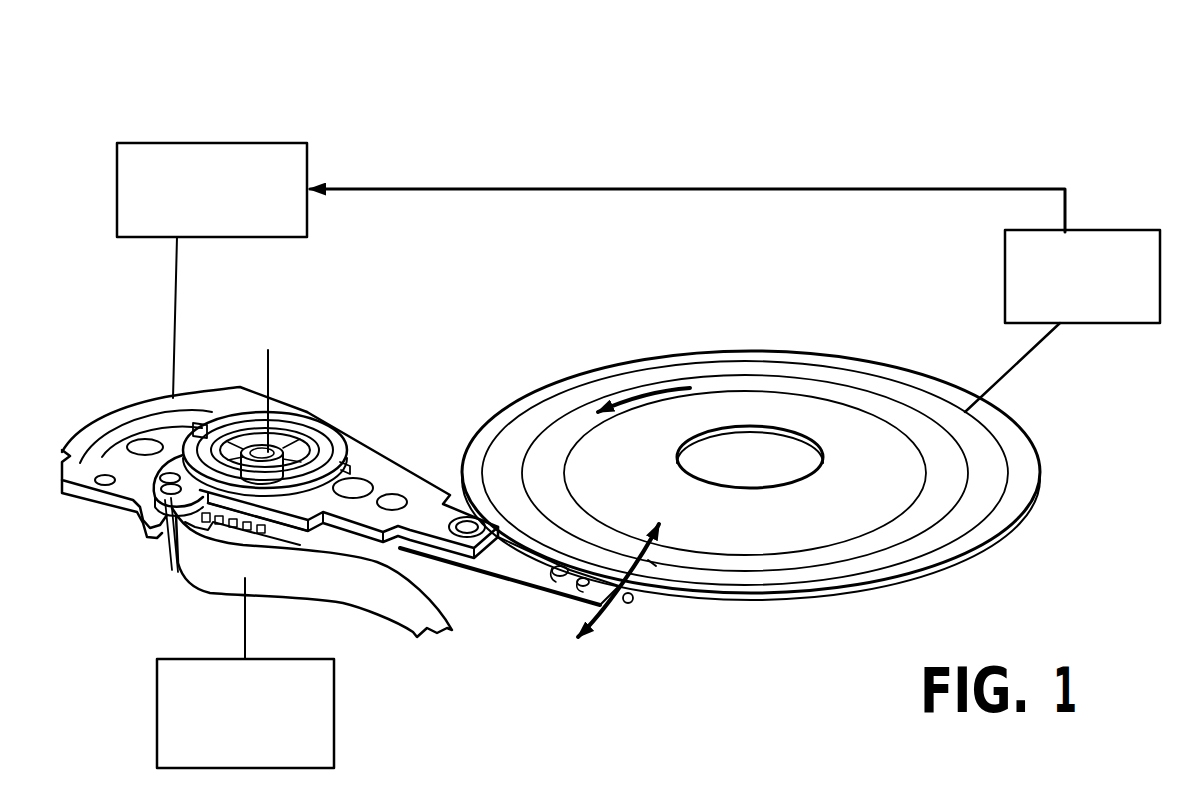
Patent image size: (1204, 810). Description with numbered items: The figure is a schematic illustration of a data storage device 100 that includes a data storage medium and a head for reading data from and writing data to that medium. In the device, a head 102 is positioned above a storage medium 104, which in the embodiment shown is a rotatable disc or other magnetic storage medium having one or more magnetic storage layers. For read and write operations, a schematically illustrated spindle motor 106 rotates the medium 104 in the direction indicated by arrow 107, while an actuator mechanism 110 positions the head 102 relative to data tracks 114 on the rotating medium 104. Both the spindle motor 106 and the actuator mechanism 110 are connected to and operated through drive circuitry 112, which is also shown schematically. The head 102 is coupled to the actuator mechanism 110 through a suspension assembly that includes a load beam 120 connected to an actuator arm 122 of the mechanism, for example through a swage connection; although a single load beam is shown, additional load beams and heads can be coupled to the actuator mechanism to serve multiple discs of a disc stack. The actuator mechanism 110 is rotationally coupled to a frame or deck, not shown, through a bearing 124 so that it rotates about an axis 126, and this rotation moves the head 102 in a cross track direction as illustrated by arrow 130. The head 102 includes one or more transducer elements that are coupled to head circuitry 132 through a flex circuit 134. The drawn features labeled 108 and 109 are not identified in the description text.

The data storage device 100 is at (942, 126).
The head 102 is at (628, 600).
The storage medium 104 is at (890, 368).
The spindle motor 106 is at (1120, 230).
The arrow 107 is at (647, 388).
The central aperture / hub 108 is at (791, 427).
The outer edge of disk 109 is at (755, 351).
The actuator mechanism 110 is at (294, 400).
The drive circuitry 112 is at (306, 152).
The data tracks 114 is at (912, 495).
The load beam 120 is at (527, 553).
The actuator arm 122 is at (406, 480).
The bearing 124 is at (262, 448).
The axis 126 is at (266, 378).
The arrow 130 is at (652, 563).
The head circuitry 132 is at (331, 710).
The flex circuit 134 is at (258, 573).